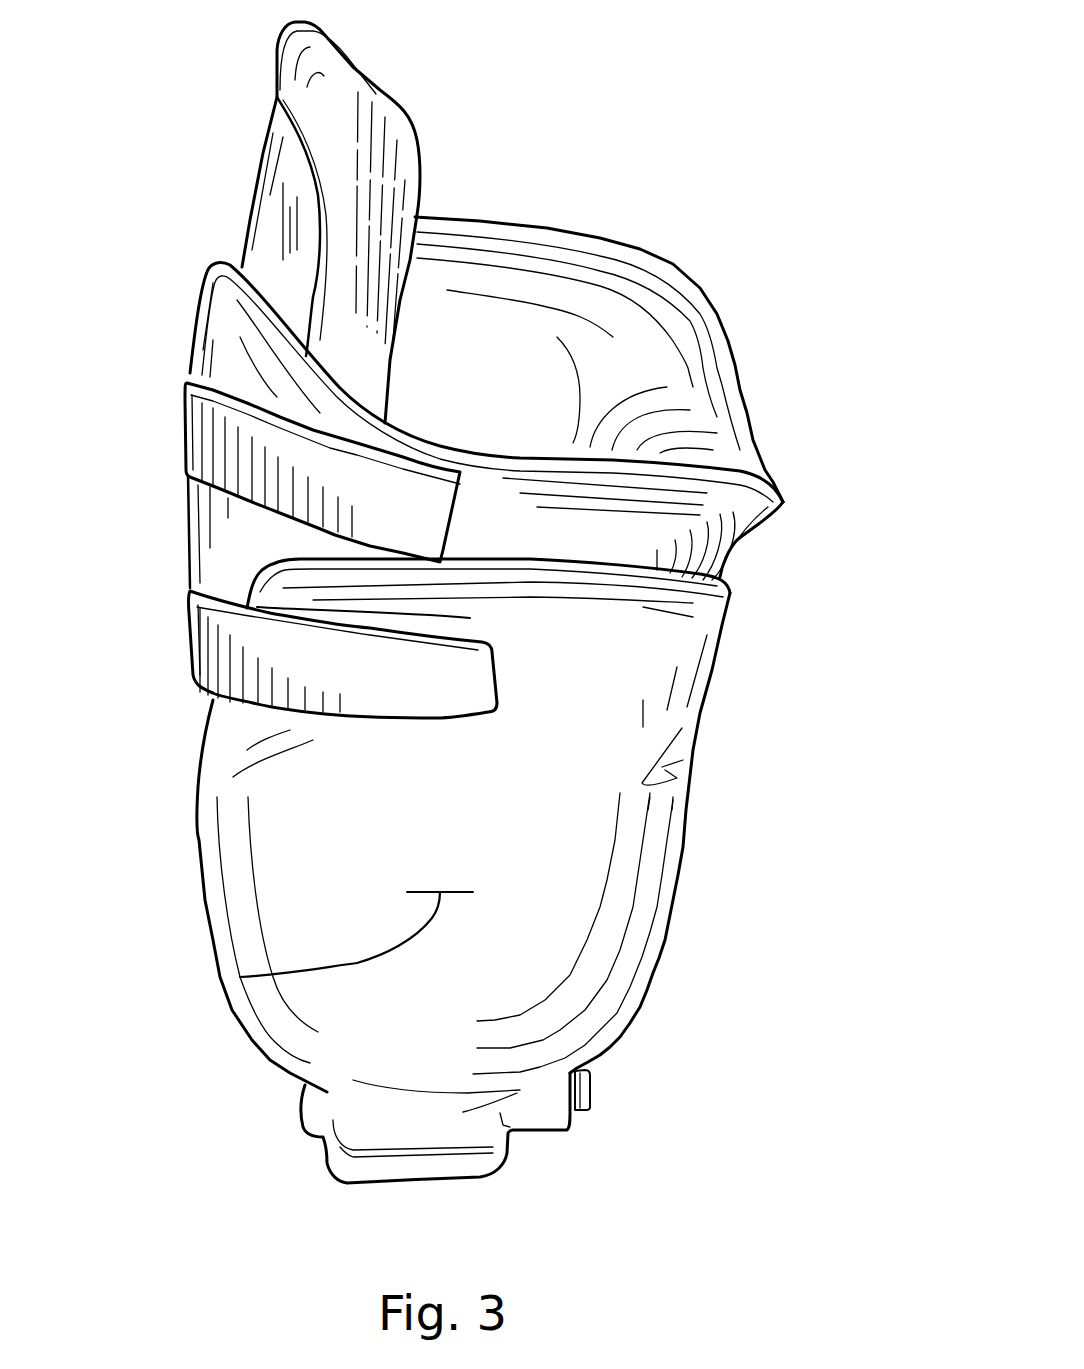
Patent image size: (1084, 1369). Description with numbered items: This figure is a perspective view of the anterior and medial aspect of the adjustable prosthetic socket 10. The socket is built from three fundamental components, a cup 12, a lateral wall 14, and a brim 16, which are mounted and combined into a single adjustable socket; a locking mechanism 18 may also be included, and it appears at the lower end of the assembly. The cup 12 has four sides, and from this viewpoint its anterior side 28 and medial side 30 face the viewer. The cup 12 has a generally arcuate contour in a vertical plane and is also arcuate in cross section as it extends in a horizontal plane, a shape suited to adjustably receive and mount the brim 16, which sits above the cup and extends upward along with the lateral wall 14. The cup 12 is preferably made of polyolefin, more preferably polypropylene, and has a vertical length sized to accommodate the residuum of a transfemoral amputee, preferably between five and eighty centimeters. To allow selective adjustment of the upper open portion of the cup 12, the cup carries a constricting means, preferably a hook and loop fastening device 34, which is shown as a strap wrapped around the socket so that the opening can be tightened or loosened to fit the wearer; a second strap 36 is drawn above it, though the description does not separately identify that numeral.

The adjustable prosthetic socket 10 is at (598, 145).
The cup 12 is at (717, 653).
The lateral wall 14 is at (360, 70).
The brim 16 is at (783, 497).
The locking mechanism 18 is at (593, 1082).
The anterior side 28 is at (240, 977).
The medial side 30 is at (683, 760).
The hook and loop fastening device 34 is at (207, 637).
The upper strap 36 is at (207, 442).